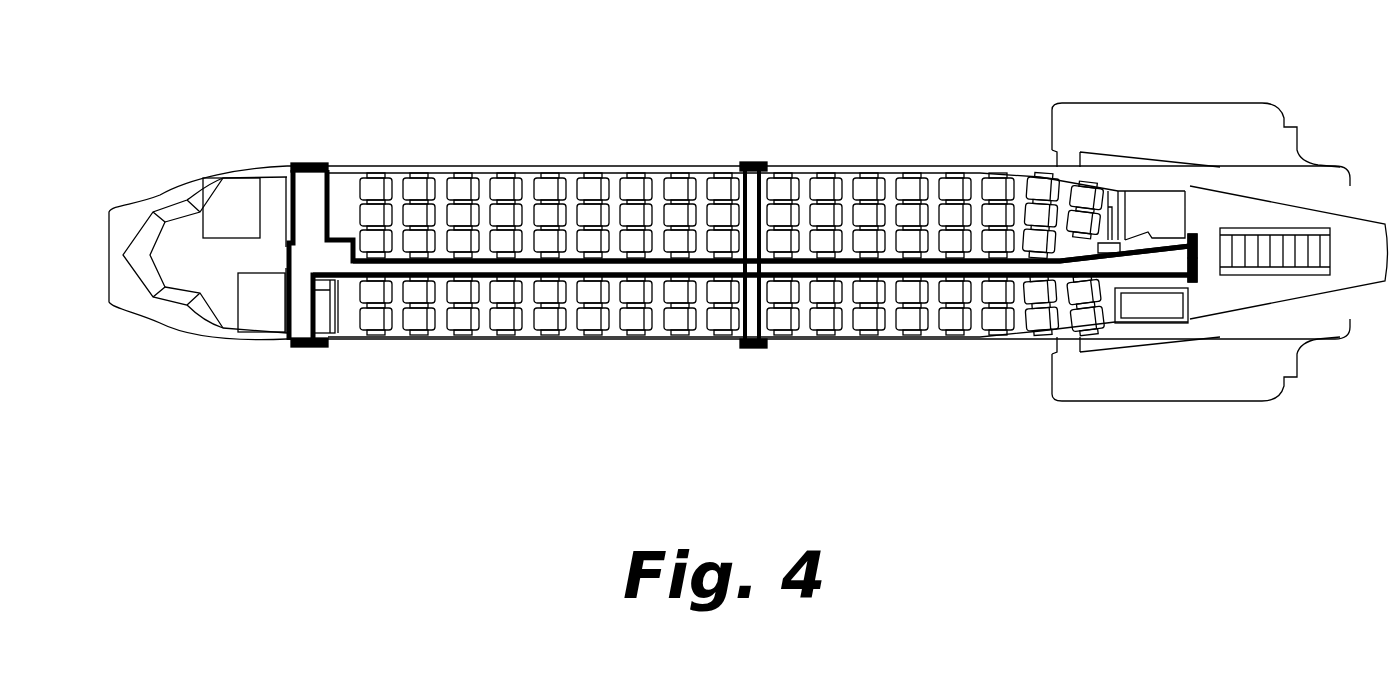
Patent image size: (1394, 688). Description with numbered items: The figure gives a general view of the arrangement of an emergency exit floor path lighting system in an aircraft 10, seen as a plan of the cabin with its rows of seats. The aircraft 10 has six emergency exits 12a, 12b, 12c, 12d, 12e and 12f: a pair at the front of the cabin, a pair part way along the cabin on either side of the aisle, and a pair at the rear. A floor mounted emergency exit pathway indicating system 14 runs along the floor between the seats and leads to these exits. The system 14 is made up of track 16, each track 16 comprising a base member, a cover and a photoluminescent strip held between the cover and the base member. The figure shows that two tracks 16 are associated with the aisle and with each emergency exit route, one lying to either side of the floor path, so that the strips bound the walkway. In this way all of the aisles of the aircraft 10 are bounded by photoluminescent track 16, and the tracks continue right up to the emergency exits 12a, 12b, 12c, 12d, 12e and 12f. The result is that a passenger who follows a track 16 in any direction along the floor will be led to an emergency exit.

The aircraft 10 is at (593, 417).
The emergency exit 12a is at (296, 163).
The emergency exit 12b is at (305, 347).
The emergency exit 12c is at (760, 163).
The emergency exit 12d is at (753, 347).
The emergency exit 12e is at (1200, 233).
The emergency exit 12f is at (1200, 281).
The floor mounted emergency exit pathway indicating system 14 is at (533, 250).
The track 16 is at (613, 258).